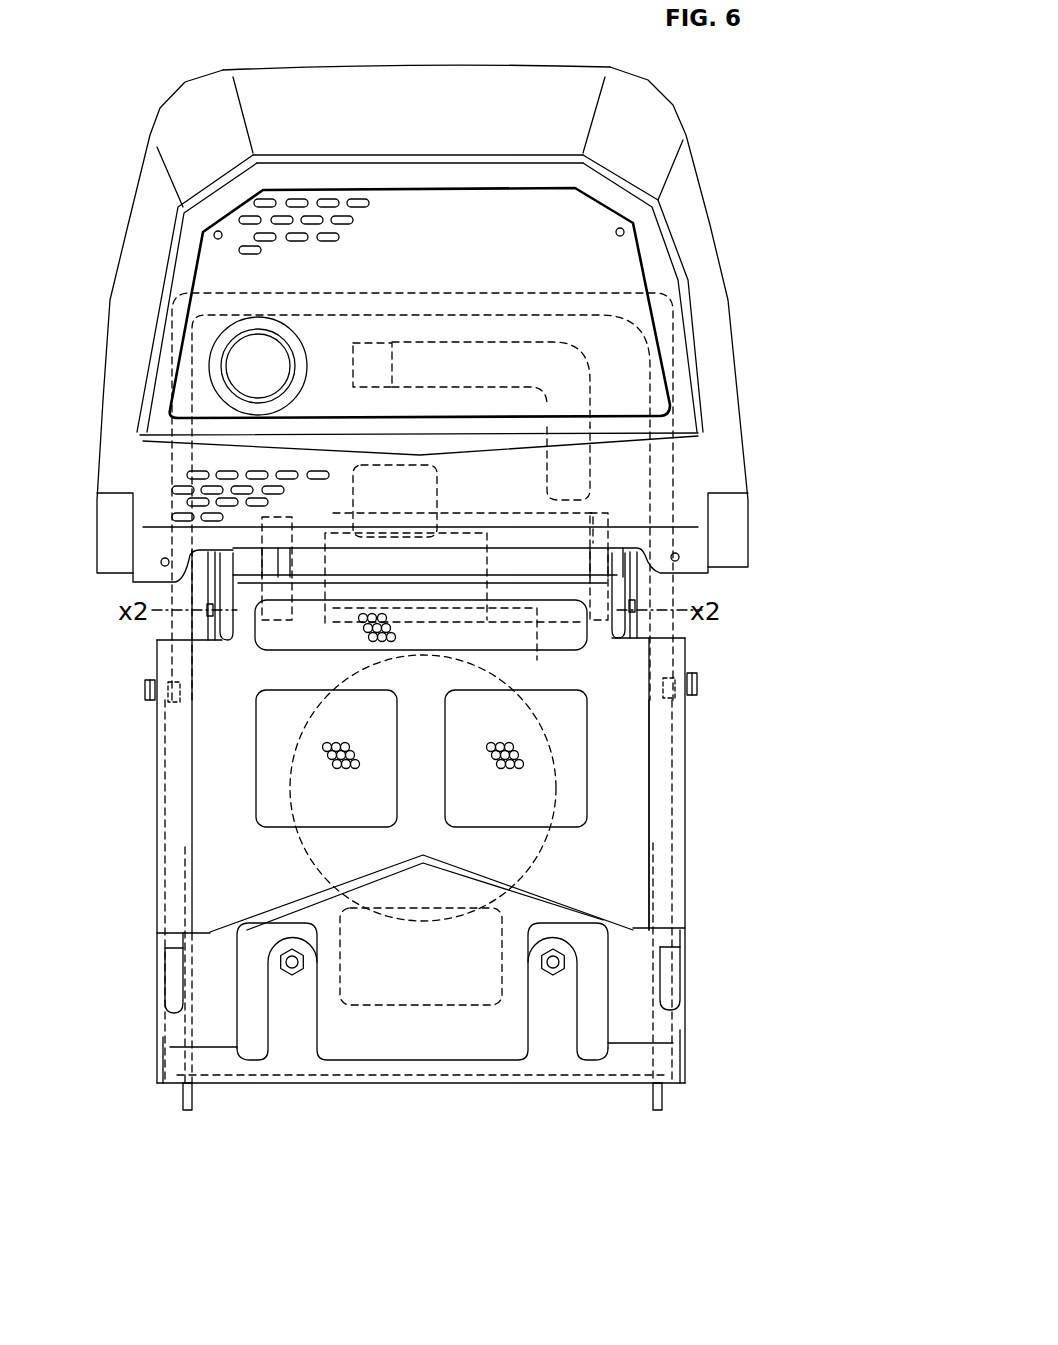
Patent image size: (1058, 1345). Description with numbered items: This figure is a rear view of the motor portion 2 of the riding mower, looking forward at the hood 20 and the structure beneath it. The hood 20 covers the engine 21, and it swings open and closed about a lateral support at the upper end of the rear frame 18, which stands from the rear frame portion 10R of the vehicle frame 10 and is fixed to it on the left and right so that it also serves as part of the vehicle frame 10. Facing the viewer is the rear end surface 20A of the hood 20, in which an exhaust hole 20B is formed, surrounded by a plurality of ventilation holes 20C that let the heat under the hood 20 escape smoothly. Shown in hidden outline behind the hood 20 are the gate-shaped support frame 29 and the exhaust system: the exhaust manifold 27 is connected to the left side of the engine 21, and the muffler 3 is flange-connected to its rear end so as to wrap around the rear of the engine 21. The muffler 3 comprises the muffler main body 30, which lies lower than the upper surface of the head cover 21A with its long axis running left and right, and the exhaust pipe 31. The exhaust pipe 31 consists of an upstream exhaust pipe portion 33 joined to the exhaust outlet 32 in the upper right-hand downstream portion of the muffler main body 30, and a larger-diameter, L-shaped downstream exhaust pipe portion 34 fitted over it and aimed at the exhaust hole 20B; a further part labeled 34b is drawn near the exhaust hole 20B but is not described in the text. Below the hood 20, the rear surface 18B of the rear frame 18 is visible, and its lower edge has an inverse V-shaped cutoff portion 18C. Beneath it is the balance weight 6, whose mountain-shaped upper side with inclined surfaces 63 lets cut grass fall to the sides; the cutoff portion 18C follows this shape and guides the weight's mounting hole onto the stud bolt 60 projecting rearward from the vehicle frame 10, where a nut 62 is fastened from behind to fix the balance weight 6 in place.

The motor portion 2 is at (526, 60).
The hood 20 is at (302, 97).
The rear end surface 20A is at (182, 267).
The exhaust hole 20B is at (285, 352).
The ventilation holes 20C is at (357, 205).
The downstream exhaust pipe portion 34 is at (378, 330).
The filler cap 34b is at (248, 376).
The gate-shaped support frame 29 is at (478, 295).
The exhaust pipe 31 is at (524, 341).
The upstream exhaust pipe portion 33 is at (590, 400).
The exhaust outlet 32 is at (587, 500).
The muffler main body 30 is at (475, 510).
The head cover 21A is at (423, 460).
The exhaust manifold 27 is at (245, 563).
The muffler 3 is at (569, 630).
The engine 21 is at (555, 718).
The rear frame 18 is at (152, 818).
The rear surface 18B is at (640, 773).
The inverse V-shaped cutoff portion 18C is at (525, 880).
The inclined surface 63 is at (355, 878).
The stud bolt 60 is at (287, 958).
The nut 62 is at (290, 977).
The balance weight 6 is at (450, 1042).
The rear frame portion 10R is at (177, 1100).
The vehicle frame 10 is at (428, 1136).